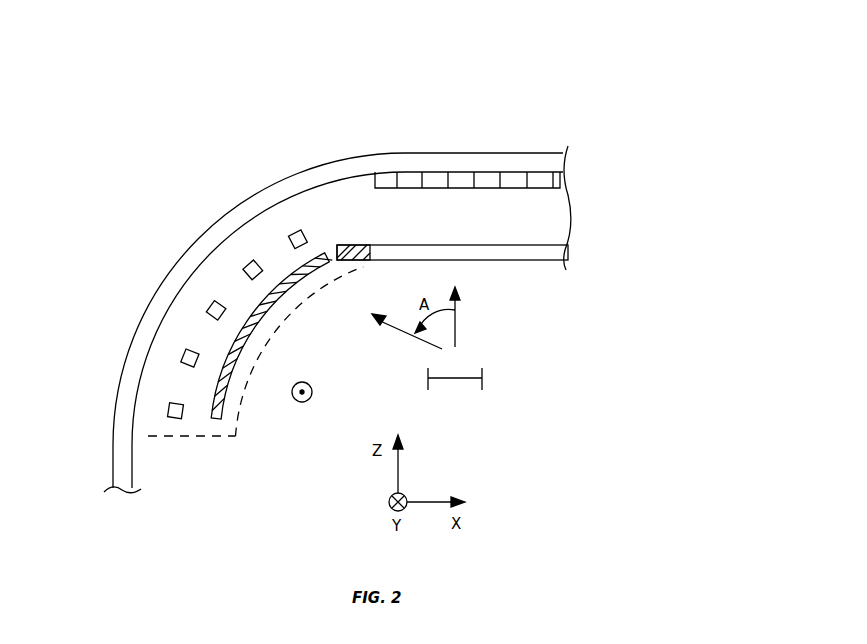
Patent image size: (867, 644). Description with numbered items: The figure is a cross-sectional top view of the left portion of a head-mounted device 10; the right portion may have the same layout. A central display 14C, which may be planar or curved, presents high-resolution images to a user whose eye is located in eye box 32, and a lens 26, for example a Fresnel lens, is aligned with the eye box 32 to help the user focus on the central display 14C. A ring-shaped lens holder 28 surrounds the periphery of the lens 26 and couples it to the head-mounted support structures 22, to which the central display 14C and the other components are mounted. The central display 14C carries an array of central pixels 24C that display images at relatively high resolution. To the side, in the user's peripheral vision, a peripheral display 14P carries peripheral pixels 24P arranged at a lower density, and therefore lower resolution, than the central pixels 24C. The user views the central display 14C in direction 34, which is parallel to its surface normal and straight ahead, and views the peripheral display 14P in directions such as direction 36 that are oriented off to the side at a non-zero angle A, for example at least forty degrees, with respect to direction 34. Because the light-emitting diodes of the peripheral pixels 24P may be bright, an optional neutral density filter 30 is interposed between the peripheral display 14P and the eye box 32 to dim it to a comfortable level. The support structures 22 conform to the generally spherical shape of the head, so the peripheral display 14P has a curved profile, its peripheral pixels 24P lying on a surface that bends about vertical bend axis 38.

The head-mounted device 10 is at (518, 67).
The central display 14C is at (568, 178).
The peripheral display 14P is at (190, 318).
The head-mounted support structures 22 is at (124, 456).
The central pixels 24C is at (460, 180).
The peripheral pixels 24P is at (294, 231).
The lens 26 is at (530, 262).
The lens holder 28 is at (355, 245).
The neutral density filter 30 is at (215, 420).
The eye box 32 is at (455, 379).
The direction 34 is at (458, 325).
The direction 36 is at (398, 333).
The vertical bend axis 38 is at (301, 402).